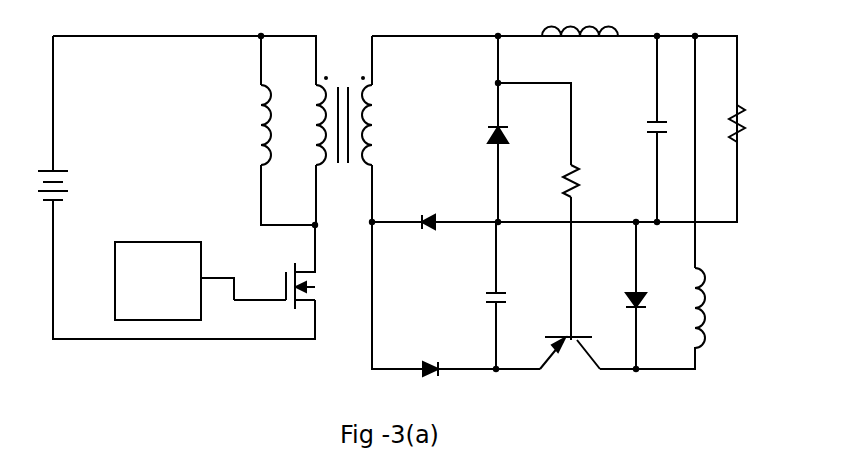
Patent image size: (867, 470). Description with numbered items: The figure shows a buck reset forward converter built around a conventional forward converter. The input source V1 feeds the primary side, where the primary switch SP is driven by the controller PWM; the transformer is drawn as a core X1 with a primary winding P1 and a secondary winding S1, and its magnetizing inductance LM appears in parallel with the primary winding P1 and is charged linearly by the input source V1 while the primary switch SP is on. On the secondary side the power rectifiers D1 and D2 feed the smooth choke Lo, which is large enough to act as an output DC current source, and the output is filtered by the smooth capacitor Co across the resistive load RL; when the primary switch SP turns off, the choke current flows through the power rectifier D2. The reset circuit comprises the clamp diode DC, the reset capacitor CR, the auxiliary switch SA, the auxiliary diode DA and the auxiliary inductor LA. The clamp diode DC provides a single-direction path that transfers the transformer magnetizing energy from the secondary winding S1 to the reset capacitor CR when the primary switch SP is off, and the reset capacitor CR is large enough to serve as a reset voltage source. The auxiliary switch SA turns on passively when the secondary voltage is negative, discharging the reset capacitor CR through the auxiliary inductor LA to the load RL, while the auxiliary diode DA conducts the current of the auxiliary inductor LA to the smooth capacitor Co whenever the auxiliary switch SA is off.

The input source V1 is at (65, 189).
The magnetizing inductance LM is at (251, 125).
The primary winding P1 is at (308, 125).
The transformer X1 is at (344, 108).
The secondary winding S1 is at (379, 125).
The power rectifier D2 is at (482, 138).
The power rectifier D1 is at (428, 211).
The smooth choke Lo is at (580, 20).
The smooth capacitor Co is at (640, 129).
The resistive load RL is at (724, 123).
The reset capacitor CR is at (480, 300).
The clamp diode DC is at (429, 384).
The auxiliary switch SA is at (570, 369).
The auxiliary diode DA is at (647, 305).
The auxiliary inductor LA is at (710, 308).
The primary switch SP is at (285, 286).
The controller PWM is at (174, 281).